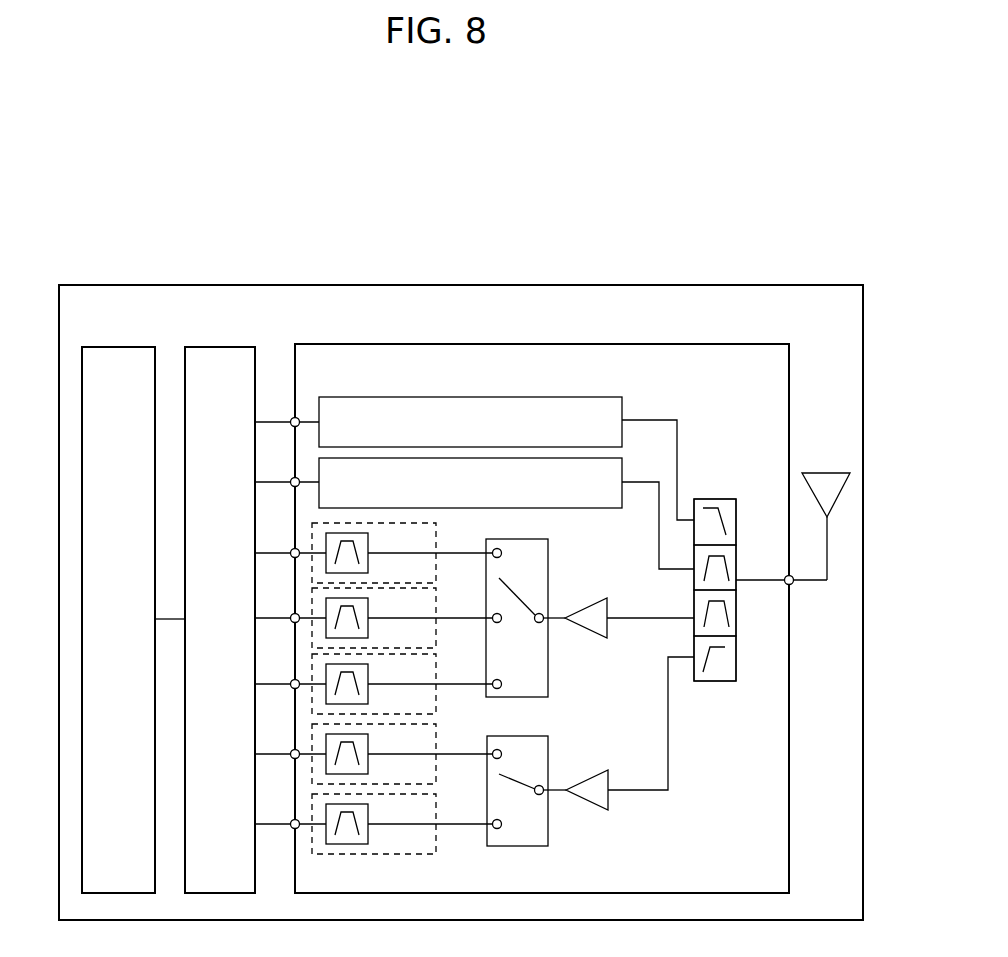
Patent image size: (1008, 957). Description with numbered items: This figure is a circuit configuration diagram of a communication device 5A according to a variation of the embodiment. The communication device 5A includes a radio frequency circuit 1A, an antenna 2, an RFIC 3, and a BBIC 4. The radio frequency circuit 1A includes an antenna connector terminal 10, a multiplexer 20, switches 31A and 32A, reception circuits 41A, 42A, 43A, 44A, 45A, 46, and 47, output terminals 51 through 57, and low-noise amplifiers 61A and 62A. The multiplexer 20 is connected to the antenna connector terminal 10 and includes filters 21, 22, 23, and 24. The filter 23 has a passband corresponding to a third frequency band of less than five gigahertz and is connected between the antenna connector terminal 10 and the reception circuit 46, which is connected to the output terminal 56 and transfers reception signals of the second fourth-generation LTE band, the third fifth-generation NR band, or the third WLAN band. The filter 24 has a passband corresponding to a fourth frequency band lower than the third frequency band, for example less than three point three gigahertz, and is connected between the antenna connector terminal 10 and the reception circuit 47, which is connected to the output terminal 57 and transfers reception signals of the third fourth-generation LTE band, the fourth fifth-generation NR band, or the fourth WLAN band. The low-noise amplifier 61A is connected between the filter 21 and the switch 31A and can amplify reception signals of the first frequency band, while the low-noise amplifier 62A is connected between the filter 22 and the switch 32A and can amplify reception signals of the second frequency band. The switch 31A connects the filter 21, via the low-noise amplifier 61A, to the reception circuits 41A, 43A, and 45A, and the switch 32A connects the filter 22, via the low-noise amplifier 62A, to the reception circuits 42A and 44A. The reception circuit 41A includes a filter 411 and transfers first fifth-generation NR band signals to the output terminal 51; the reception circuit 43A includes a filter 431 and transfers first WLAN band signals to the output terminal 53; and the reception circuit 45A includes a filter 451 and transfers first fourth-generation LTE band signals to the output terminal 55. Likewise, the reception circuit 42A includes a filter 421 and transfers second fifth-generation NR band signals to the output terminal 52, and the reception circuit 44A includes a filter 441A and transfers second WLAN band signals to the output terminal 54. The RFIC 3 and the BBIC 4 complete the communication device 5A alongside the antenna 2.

The communication device 5A is at (807, 285).
The radio frequency circuit 1A is at (362, 344).
The BBIC 4 is at (108, 345).
The RFIC 3 is at (220, 345).
The antenna 2 is at (822, 470).
The antenna connector terminal 10 is at (792, 586).
The multiplexer 20 is at (715, 498).
The filter 21 is at (737, 613).
The filter 22 is at (737, 655).
The filter 23 is at (737, 562).
The filter 24 is at (737, 520).
The reception circuit 46 is at (623, 465).
The reception circuit 47 is at (623, 403).
The output terminal 51 is at (292, 549).
The output terminal 52 is at (292, 750).
The output terminal 53 is at (292, 614).
The output terminal 54 is at (292, 820).
The output terminal 55 is at (292, 680).
The output terminal 56 is at (292, 478).
The output terminal 57 is at (292, 418).
The reception circuit 41A is at (437, 545).
The reception circuit 42A is at (436, 743).
The reception circuit 43A is at (437, 610).
The reception circuit 44A is at (436, 813).
The reception circuit 45A is at (437, 675).
The filter 411 is at (370, 550).
The filter 421 is at (369, 752).
The filter 431 is at (370, 615).
The filter 441A is at (369, 822).
The filter 451 is at (370, 680).
The switch 31A is at (500, 539).
The switch 32A is at (518, 846).
The low-noise amplifier 61A is at (607, 608).
The low-noise amplifier 62A is at (608, 780).